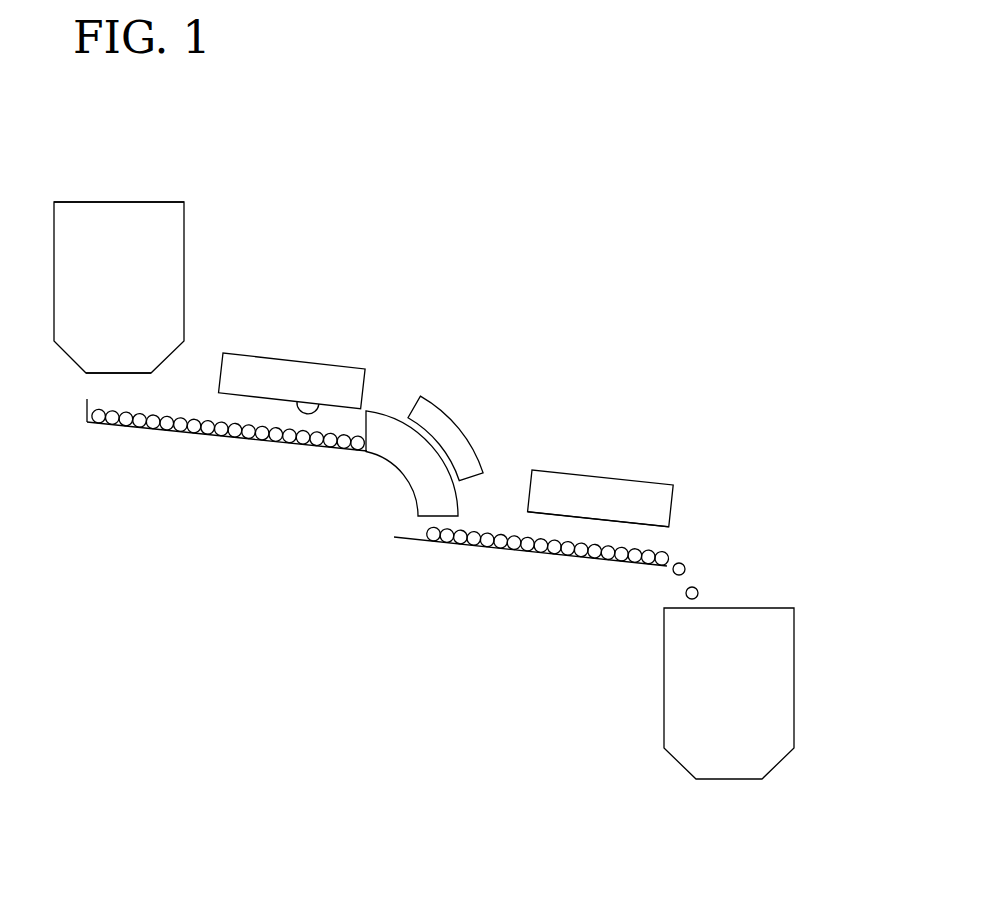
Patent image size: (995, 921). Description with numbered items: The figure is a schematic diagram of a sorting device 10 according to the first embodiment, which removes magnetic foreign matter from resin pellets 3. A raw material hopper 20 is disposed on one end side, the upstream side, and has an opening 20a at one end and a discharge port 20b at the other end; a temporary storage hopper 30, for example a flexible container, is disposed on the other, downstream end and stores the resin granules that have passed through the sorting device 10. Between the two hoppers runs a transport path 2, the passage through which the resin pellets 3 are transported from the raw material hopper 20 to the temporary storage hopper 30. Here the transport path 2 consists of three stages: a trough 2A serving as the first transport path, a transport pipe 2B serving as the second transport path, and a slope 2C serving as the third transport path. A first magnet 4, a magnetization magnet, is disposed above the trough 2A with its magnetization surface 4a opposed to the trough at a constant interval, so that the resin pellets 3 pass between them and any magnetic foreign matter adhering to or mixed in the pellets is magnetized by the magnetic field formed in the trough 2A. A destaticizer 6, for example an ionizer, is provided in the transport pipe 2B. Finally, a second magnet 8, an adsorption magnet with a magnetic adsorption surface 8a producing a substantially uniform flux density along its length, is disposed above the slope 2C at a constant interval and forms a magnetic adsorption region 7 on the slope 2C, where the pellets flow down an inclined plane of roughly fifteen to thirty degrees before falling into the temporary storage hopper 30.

The sorting device 10 is at (546, 250).
The raw material hopper 20 is at (184, 236).
The opening 20a is at (117, 202).
The discharge port 20b is at (117, 374).
The transport path 2 is at (190, 378).
The trough 2A is at (173, 433).
The transport pipe 2B is at (387, 409).
The slope 2C is at (520, 552).
The resin pellets 3 is at (262, 433).
The first magnet 4 is at (293, 357).
The magnetization surface 4a is at (329, 407).
The destaticizer 6 is at (462, 423).
The magnetic adsorption region 7 is at (598, 443).
The second magnet 8 is at (634, 479).
The magnetic adsorption surface 8a is at (637, 523).
The temporary storage hopper 30 is at (794, 669).